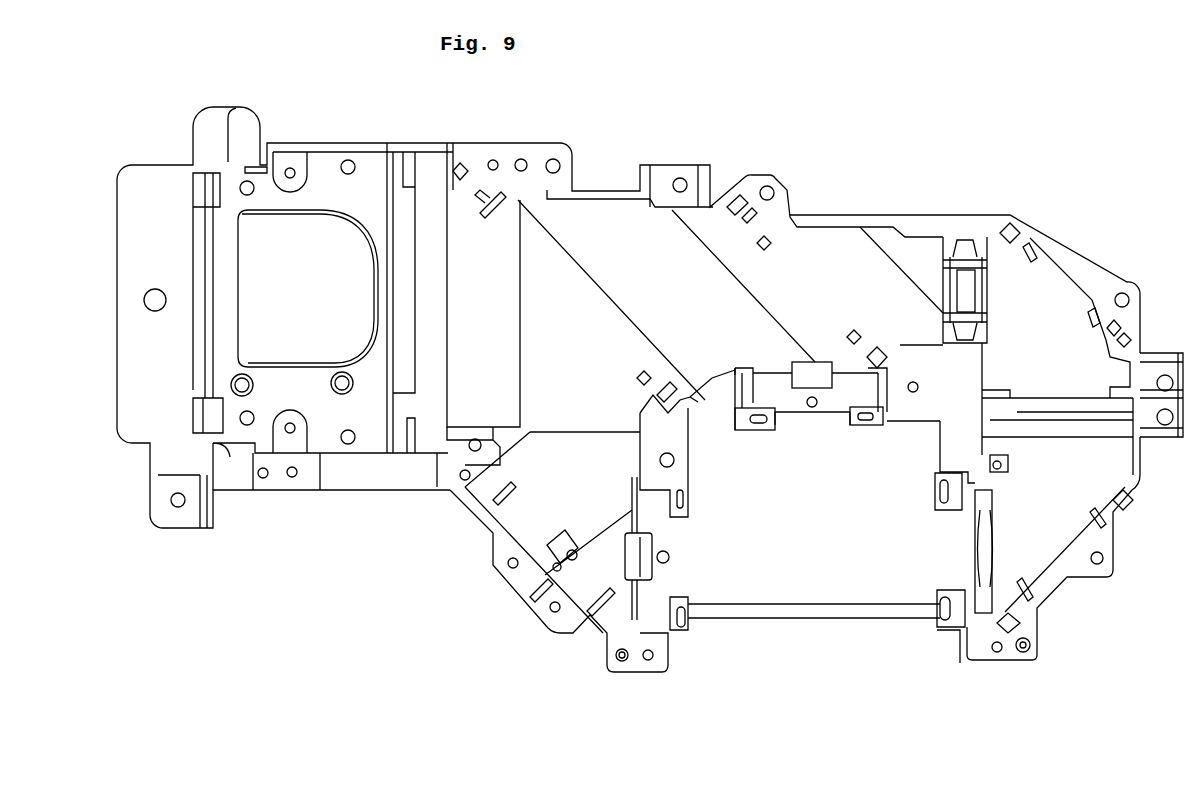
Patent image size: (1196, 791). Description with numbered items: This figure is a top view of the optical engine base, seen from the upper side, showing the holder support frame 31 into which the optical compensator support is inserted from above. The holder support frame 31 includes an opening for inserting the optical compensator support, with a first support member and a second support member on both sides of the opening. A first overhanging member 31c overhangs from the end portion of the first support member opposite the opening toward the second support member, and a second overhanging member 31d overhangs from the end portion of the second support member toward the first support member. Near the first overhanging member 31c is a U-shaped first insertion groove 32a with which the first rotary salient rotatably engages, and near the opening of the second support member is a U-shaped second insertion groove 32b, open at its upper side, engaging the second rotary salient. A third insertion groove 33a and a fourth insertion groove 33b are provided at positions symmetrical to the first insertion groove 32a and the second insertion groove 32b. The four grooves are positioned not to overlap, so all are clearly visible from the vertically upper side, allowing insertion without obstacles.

The holder support frame 31 is at (758, 460).
The first overhanging member 31c is at (780, 430).
The second overhanging member 31d is at (840, 430).
The first insertion groove 32a is at (763, 430).
The second insertion groove 32b is at (897, 385).
The third insertion groove 33a is at (853, 430).
The fourth insertion groove 33b is at (735, 430).